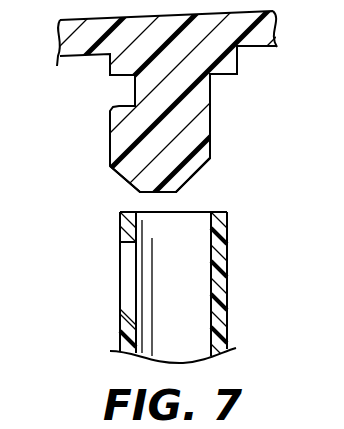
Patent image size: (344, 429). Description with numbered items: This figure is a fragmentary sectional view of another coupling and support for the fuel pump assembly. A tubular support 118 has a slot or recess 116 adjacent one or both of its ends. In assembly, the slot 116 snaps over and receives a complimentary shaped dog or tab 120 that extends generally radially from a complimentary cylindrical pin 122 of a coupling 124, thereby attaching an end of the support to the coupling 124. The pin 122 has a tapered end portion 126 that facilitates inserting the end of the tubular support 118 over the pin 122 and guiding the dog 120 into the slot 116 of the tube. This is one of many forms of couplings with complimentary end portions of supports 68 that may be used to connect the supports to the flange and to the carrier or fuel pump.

The support 68 is at (252, 293).
The slot 116 is at (120, 272).
The tubular support 118 is at (105, 319).
The dog 120 is at (110, 123).
The cylindrical pin 122 is at (230, 108).
The coupling 124 is at (243, 170).
The tapered end portion 126 is at (201, 168).